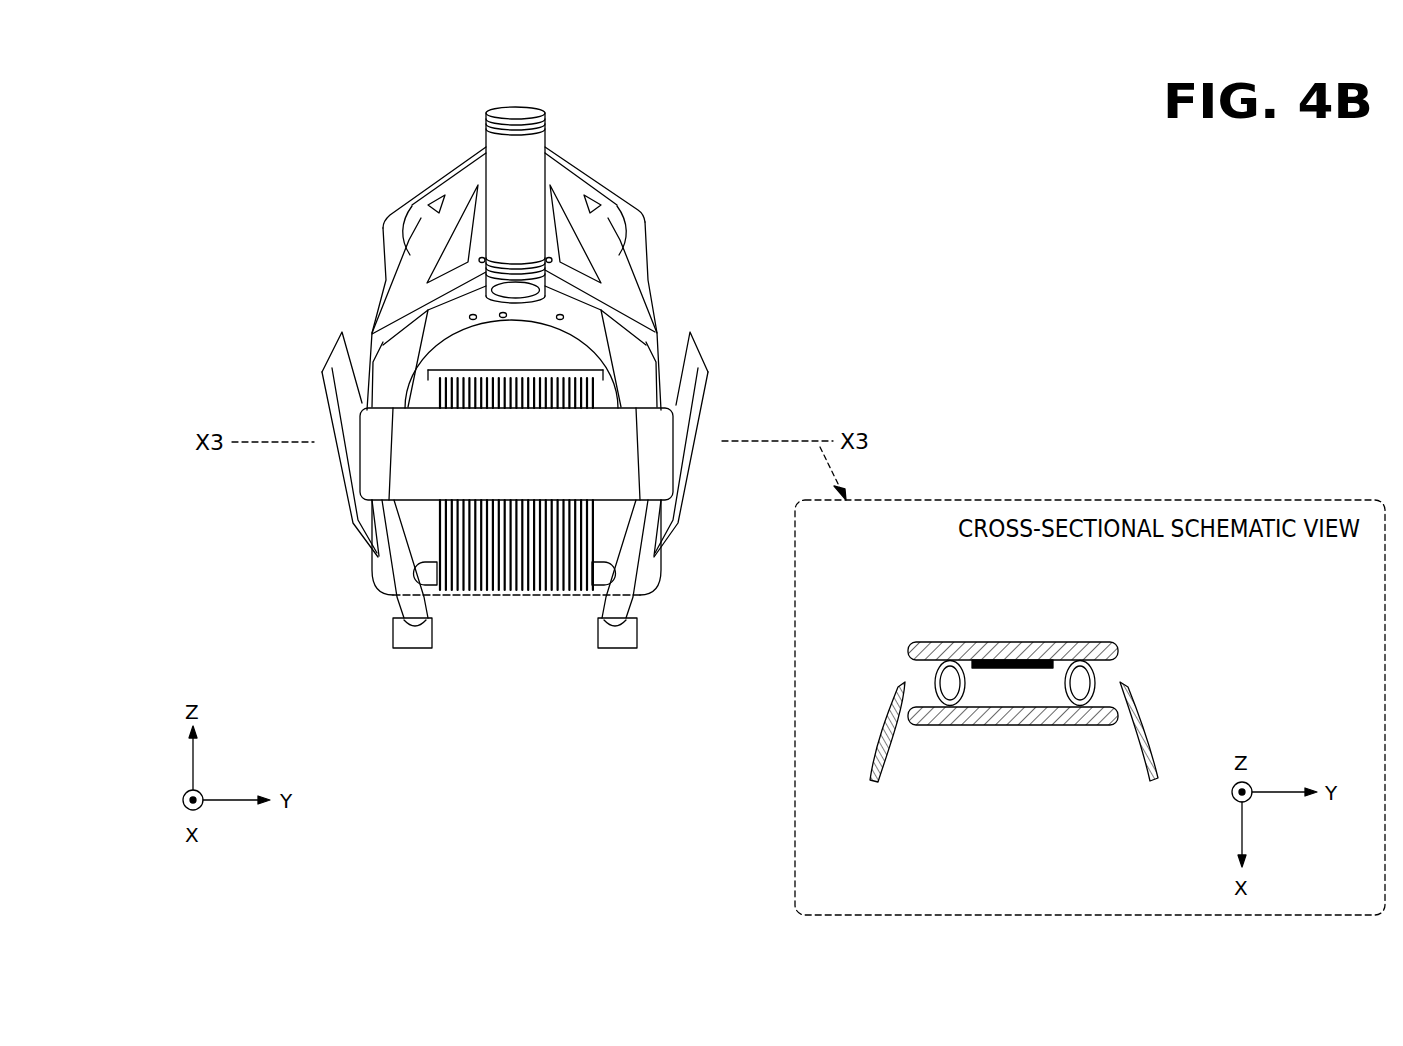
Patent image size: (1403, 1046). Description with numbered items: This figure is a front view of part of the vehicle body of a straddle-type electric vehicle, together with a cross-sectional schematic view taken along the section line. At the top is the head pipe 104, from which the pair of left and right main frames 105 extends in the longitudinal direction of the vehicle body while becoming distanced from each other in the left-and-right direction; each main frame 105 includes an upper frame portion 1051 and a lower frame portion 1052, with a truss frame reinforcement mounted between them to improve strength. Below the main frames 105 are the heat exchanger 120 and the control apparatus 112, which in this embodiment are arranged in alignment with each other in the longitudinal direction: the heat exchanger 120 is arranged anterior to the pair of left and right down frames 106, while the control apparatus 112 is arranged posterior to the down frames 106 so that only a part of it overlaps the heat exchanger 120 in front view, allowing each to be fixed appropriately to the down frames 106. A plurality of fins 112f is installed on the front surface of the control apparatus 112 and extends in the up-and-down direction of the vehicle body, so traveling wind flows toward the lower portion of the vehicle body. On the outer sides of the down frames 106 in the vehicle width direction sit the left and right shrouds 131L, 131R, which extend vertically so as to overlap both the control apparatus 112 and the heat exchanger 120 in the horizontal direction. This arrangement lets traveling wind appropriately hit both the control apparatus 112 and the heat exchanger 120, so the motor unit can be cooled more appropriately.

The head pipe 104 is at (487, 137).
The main frame 105 is at (600, 388).
The upper frame portion 1051 is at (637, 208).
The lower frame portion 1052 is at (660, 330).
The control apparatus 112 is at (816, 541).
The fins 112f is at (540, 563).
The heat exchanger 120 is at (673, 453).
The down frames 106 is at (932, 722).
The right shroud 131R is at (325, 355).
The left shroud 131L is at (712, 360).